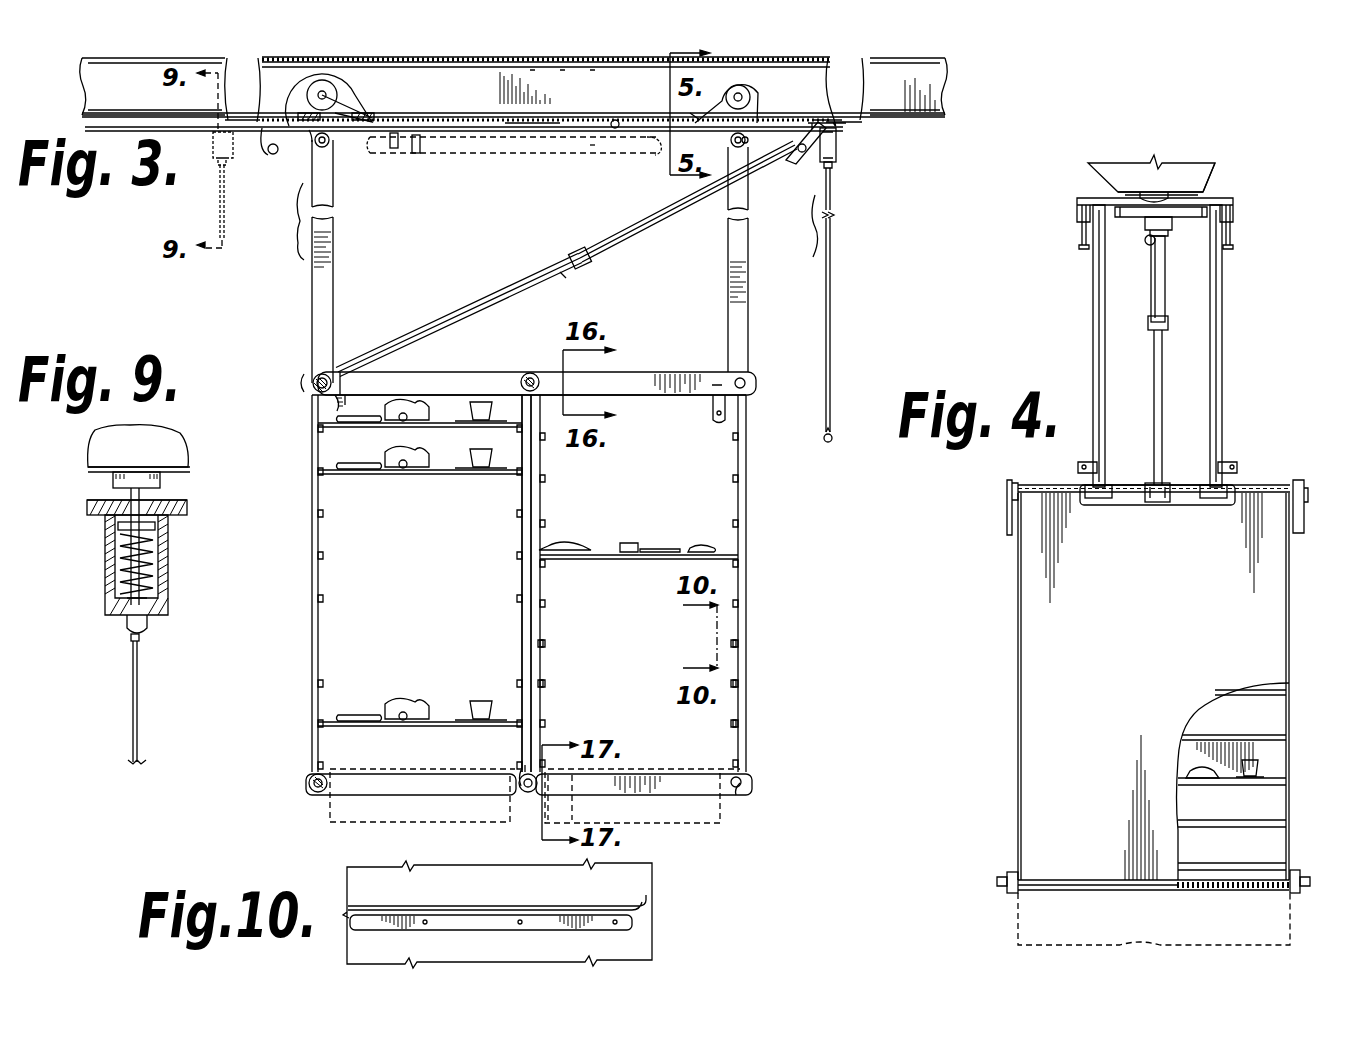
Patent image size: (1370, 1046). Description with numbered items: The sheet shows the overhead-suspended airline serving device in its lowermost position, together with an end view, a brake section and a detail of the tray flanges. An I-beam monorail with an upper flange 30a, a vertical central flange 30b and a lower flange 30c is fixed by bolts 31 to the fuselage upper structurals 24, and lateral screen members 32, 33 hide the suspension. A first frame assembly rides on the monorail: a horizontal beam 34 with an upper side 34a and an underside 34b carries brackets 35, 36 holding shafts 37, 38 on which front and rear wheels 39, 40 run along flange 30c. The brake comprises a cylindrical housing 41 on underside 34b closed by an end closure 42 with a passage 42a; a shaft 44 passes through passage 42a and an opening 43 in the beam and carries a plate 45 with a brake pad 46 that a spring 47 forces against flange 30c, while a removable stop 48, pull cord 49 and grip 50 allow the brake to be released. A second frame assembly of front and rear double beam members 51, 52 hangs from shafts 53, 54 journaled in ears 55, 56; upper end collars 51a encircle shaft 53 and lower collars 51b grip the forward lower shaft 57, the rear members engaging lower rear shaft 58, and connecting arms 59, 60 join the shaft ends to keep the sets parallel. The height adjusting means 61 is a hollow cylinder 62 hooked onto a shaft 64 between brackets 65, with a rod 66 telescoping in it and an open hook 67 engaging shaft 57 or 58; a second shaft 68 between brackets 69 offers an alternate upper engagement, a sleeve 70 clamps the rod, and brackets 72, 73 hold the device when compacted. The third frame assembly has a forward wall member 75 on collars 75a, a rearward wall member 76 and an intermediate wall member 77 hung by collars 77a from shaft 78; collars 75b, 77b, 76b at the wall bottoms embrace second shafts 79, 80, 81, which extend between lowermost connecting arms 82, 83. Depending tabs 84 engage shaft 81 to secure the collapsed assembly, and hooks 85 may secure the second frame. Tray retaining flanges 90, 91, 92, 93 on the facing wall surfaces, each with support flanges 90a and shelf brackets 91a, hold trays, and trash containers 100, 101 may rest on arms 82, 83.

In FIG. 3, the plane fuselage upper structurals 24 is at (455, 58).
In FIG. 3, the upper flange 30a is at (644, 68).
In FIG. 3, the central flange 30b is at (494, 90).
In FIG. 3, the lower flange 30c is at (621, 108).
In FIG. 3, the bolts 31 is at (834, 80).
In FIG. 3, the lateral cover or screen member 32 is at (225, 102).
In FIG. 4, the lateral cover or screen member 32 is at (1096, 168).
In FIG. 3, the lateral cover or screen member 33 is at (514, 86).
In FIG. 4, the lateral cover or screen member 33 is at (1212, 178).
In FIG. 3, the beam 34 is at (470, 133).
In FIG. 9, the beam 34 is at (188, 505).
In FIG. 4, the beam 34 is at (1120, 192).
In FIG. 3, the upper side of beam 34a is at (512, 128).
In FIG. 3, the underside of beam 34b is at (592, 150).
In FIG. 3, the brackets 35 is at (345, 106).
In FIG. 4, the brackets 35 is at (1163, 196).
In FIG. 3, the brackets 36 is at (708, 110).
In FIG. 3, the shaft 37 is at (308, 96).
In FIG. 3, the shaft 38 is at (752, 100).
In FIG. 3, the front wheels 39 is at (336, 90).
In FIG. 3, the rear wheels 40 is at (750, 90).
In FIG. 3, the cylindrical housing 41 is at (838, 147).
In FIG. 9, the cylindrical housing 41 is at (168, 562).
In FIG. 3, the end closure 42 is at (834, 166).
In FIG. 9, the end closure 42 is at (160, 612).
In FIG. 9, the passage 42a is at (126, 622).
In FIG. 9, the opening 43 is at (88, 504).
In FIG. 9, the shaft 44 is at (118, 526).
In FIG. 3, the plate 45 is at (846, 124).
In FIG. 9, the plate 45 is at (165, 484).
In FIG. 9, the brake pad 46 is at (118, 483).
In FIG. 9, the spring 47 is at (120, 580).
In FIG. 9, the removable stop 48 is at (141, 636).
In FIG. 3, the pull cord or cable 49 is at (829, 312).
In FIG. 9, the pull cord or cable 49 is at (133, 712).
In FIG. 3, the grip 50 is at (822, 440).
In FIG. 3, the double beam members 51 is at (334, 292).
In FIG. 4, the double beam members 51 is at (1093, 360).
In FIG. 4, the upper end collars 51a is at (1082, 220).
In FIG. 4, the lower collars 51b is at (1106, 487).
In FIG. 3, the double beam members 52 is at (749, 326).
In FIG. 3, the shaft 53 is at (330, 143).
In FIG. 4, the shaft 53 is at (1140, 222).
In FIG. 3, the shaft 54 is at (731, 142).
In FIG. 3, the ears 55 is at (312, 135).
In FIG. 4, the ears 55 is at (1105, 205).
In FIG. 3, the ears 56 is at (748, 142).
In FIG. 3, the forward lower shaft 57 is at (314, 376).
In FIG. 4, the forward lower shaft 57 is at (1142, 505).
In FIG. 3, the lower rear shaft 58 is at (756, 383).
In FIG. 3, the connecting arm 59 is at (648, 388).
In FIG. 3, the connecting arm 60 is at (430, 372).
In FIG. 4, the connecting arm 60 is at (1030, 487).
In FIG. 3, the height adjusting means 61 is at (562, 274).
In FIG. 3, the hollow cylinder 62 is at (654, 240).
In FIG. 4, the hollow cylinder 62 is at (1168, 288).
In FIG. 3, the shaft 64 is at (806, 160).
In FIG. 3, the brackets 65 is at (803, 135).
In FIG. 4, the brackets 65 is at (1165, 240).
In FIG. 3, the rod 66 is at (385, 160).
In FIG. 4, the rod 66 is at (1163, 424).
In FIG. 4, the hook type engaging means 67 is at (1160, 502).
In FIG. 3, the second shaft 68 is at (278, 148).
In FIG. 3, the brackets 69 is at (282, 151).
In FIG. 3, the sleeve 70 is at (400, 150).
In FIG. 4, the sleeve 70 is at (1150, 329).
In FIG. 3, the bracket 72 is at (655, 150).
In FIG. 3, the bracket 73 is at (414, 158).
In FIG. 3, the forward transverse wall member 75 is at (312, 535).
In FIG. 10, the forward transverse wall member 75 is at (397, 863).
In FIG. 4, the forward transverse wall member 75 is at (1290, 630).
In FIG. 3, the collars 75a is at (304, 386).
In FIG. 4, the collars 75a is at (1043, 487).
In FIG. 3, the collars 75b is at (314, 792).
In FIG. 3, the rearward wall member 76 is at (745, 545).
In FIG. 3, the collars 76b is at (738, 797).
In FIG. 3, the intermediate wall member 77 is at (528, 580).
In FIG. 3, the collars 77a is at (524, 376).
In FIG. 3, the collars 77b is at (520, 768).
In FIG. 3, the shaft 78 is at (536, 372).
In FIG. 3, the second shaft 79 is at (308, 782).
In FIG. 4, the second shaft 79 is at (997, 882).
In FIG. 3, the second shaft 80 is at (518, 784).
In FIG. 3, the second shaft 81 is at (744, 782).
In FIG. 3, the connecting arm 82 is at (688, 780).
In FIG. 4, the connecting arm 82 is at (1296, 870).
In FIG. 3, the connecting arm 83 is at (375, 784).
In FIG. 4, the connecting arm 83 is at (1012, 872).
In FIG. 3, the depending tabs 84 is at (348, 398).
In FIG. 4, the depending tabs 84 is at (1007, 528).
In FIG. 4, the hooks 85 is at (1079, 242).
In FIG. 3, the tray receiving and retaining means 90 is at (322, 615).
In FIG. 10, the tray receiving and retaining means 90 is at (499, 903).
In FIG. 10, the support flanges 90a is at (501, 927).
In FIG. 3, the tray receiving and retaining means 91 is at (530, 660).
In FIG. 4, the tray receiving and retaining means 91 is at (1254, 729).
In FIG. 4, the shelf bracket 91a is at (1272, 753).
In FIG. 3, the tray receiving and retaining means 92 is at (538, 622).
In FIG. 3, the tray receiving and retaining means 93 is at (733, 700).
In FIG. 3, the trash container 100 is at (340, 818).
In FIG. 4, the trash container 100 is at (1040, 931).
In FIG. 3, the trash container 101 is at (570, 805).